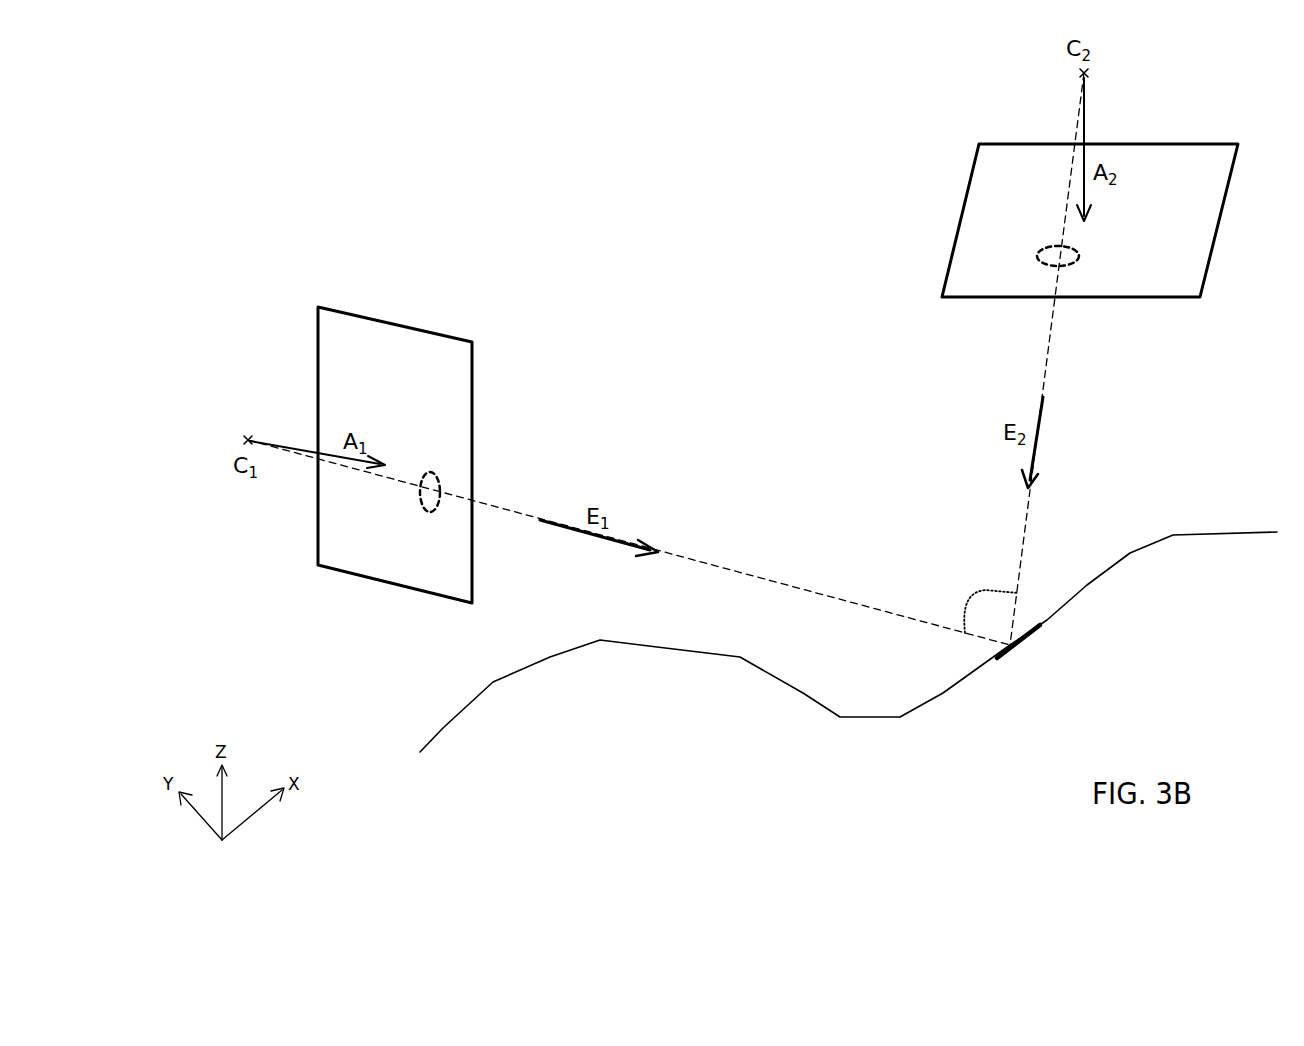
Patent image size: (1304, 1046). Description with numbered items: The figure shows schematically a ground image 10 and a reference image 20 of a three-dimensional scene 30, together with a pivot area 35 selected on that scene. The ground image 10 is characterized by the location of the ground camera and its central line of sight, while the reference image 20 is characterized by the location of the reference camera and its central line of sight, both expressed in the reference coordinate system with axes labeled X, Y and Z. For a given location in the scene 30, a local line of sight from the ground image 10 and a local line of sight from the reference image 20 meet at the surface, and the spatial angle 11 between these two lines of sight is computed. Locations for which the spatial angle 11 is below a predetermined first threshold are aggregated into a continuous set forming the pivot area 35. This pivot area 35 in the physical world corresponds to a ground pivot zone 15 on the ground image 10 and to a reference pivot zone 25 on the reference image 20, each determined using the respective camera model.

The ground image 10 is at (318, 307).
The ground pivot zone 15 is at (430, 472).
The reference image 20 is at (1232, 144).
The reference pivot zone 25 is at (1037, 257).
The three-dimensional scene 30 is at (430, 745).
The pivot area 35 is at (1022, 642).
The spatial angle 11 is at (977, 590).